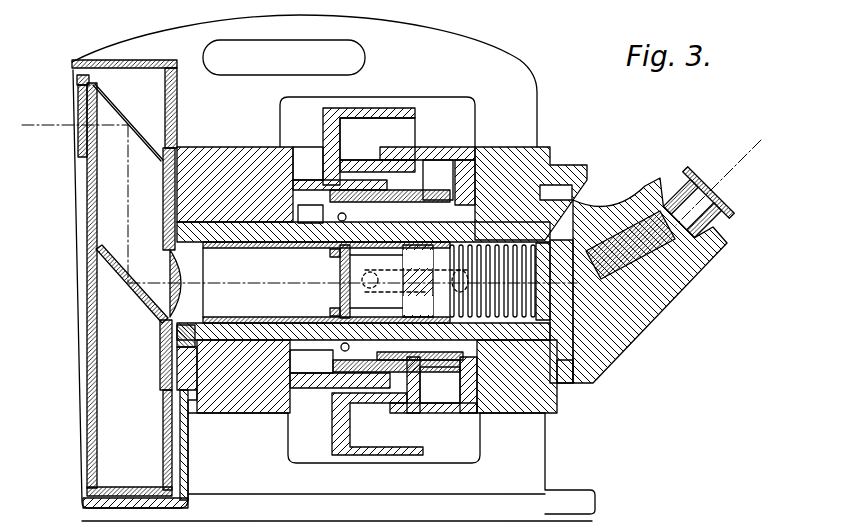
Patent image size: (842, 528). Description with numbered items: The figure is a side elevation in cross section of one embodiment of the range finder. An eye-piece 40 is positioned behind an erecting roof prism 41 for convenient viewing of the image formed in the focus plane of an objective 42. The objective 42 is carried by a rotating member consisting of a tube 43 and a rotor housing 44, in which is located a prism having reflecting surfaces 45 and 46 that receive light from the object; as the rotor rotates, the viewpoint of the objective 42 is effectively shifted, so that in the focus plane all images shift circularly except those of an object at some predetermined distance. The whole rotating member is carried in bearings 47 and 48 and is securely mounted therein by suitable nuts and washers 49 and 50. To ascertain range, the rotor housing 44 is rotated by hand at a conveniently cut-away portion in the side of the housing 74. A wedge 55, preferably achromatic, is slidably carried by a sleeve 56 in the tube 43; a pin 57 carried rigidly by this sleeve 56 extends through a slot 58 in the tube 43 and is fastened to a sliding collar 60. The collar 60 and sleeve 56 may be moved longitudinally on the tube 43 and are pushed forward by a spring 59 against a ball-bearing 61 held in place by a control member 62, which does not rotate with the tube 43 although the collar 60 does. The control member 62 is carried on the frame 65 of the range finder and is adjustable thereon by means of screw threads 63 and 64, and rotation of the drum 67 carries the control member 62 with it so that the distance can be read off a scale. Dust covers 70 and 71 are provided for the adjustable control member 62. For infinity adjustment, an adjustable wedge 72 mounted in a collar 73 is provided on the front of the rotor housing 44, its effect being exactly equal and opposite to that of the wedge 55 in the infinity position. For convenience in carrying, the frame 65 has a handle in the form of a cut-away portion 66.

The eye-piece 40 is at (722, 207).
The erecting roof prism 41 is at (658, 262).
The objective 42 is at (186, 297).
The tube 43 is at (177, 337).
The rotor housing 44 is at (173, 452).
The reflecting surface 45 is at (113, 268).
The reflecting surface 46 is at (155, 153).
The bearing 47 is at (180, 366).
The bearing 48 is at (548, 163).
The nut and washer 49 is at (291, 362).
The nut and washer 50 is at (562, 383).
The wedge 55 is at (340, 292).
The sleeve 56 is at (312, 258).
The pin 57 is at (340, 277).
The slot 58 is at (418, 281).
The spring 59 is at (590, 197).
The sliding collar 60 is at (476, 281).
The ball-bearing 61 is at (341, 348).
The control member 62 is at (333, 215).
The screw thread 63 is at (353, 180).
The screw thread 64 is at (428, 196).
The frame 65 is at (497, 54).
The cut-away portion 66 is at (322, 44).
The drum 67 is at (416, 113).
The dust cover 70 is at (438, 147).
The dust cover 71 is at (305, 178).
The adjustable wedge 72 is at (79, 110).
The collar 73 is at (77, 80).
The housing 74 is at (75, 60).